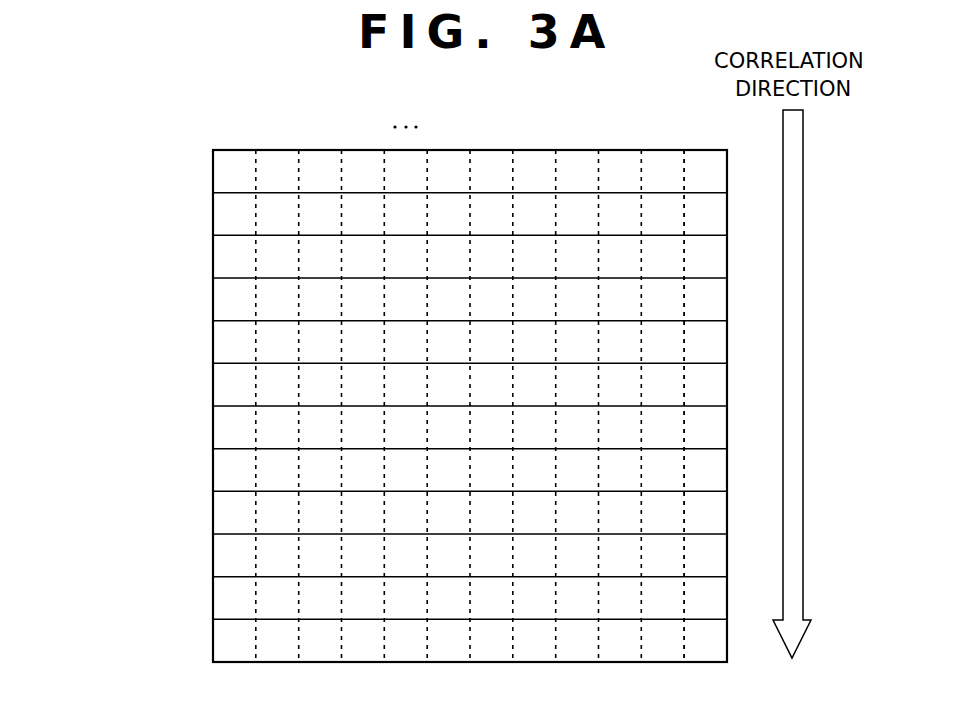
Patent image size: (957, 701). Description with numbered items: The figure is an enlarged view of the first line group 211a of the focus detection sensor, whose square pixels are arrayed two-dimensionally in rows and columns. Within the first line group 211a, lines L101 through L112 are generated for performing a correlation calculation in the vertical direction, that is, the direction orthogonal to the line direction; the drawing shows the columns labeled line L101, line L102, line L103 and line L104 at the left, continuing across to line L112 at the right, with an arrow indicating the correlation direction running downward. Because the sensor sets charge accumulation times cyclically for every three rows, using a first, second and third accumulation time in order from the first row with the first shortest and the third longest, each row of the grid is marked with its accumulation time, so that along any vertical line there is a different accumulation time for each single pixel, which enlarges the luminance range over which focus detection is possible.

The first line group 211a is at (104, 100).
The line L101 is at (236, 391).
The line L102 is at (278, 379).
The line L103 is at (321, 391).
The line L104 is at (364, 379).
The line L112 is at (702, 391).